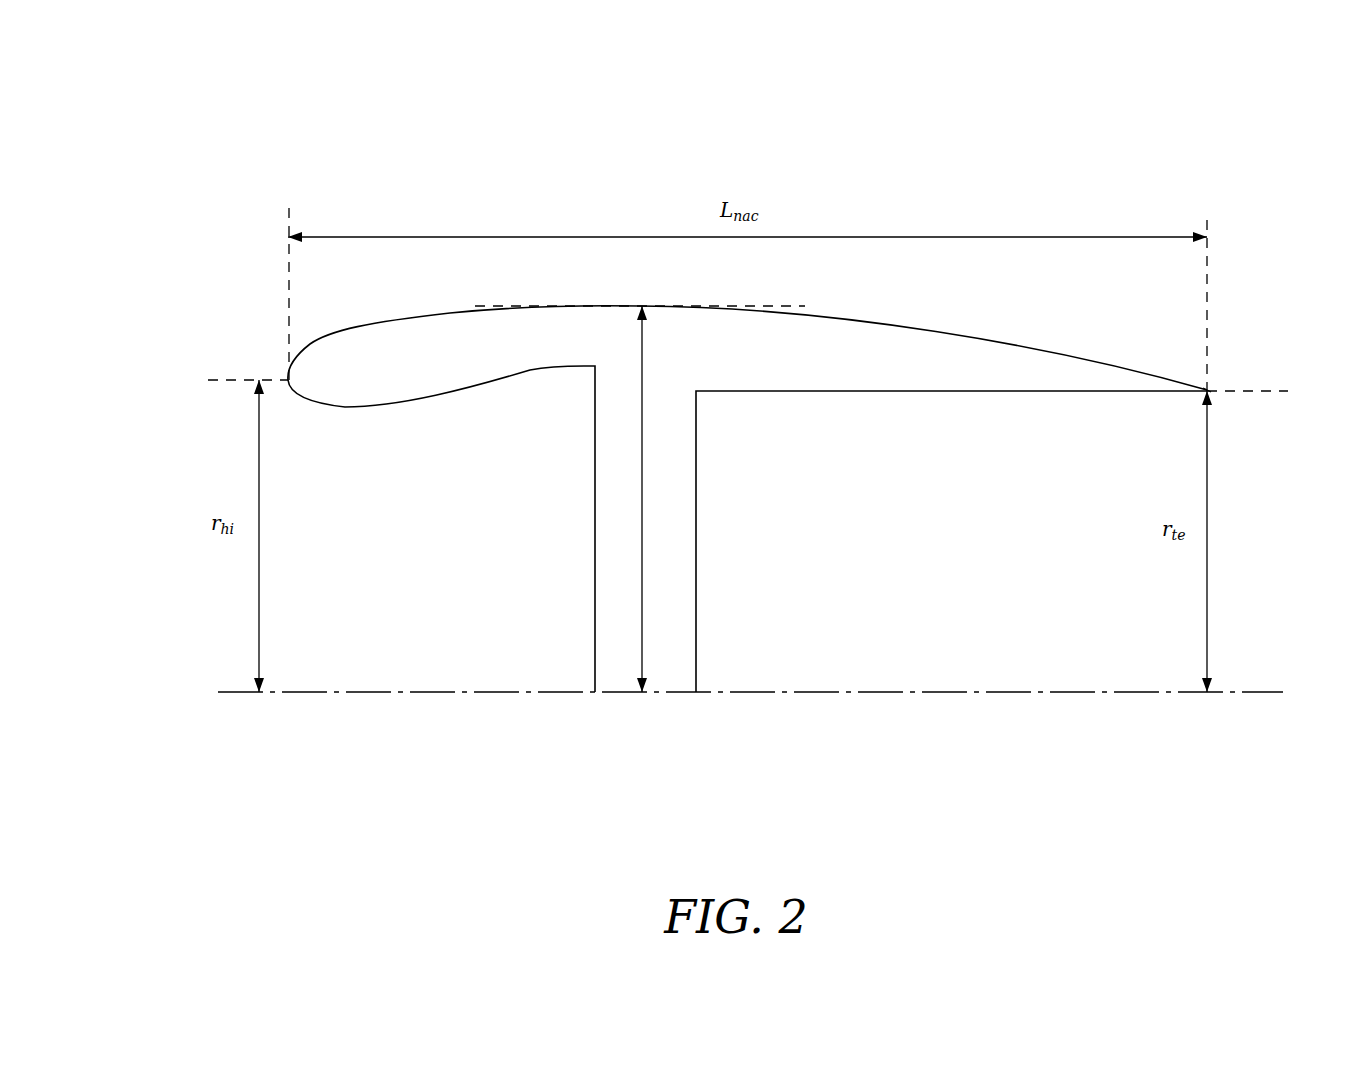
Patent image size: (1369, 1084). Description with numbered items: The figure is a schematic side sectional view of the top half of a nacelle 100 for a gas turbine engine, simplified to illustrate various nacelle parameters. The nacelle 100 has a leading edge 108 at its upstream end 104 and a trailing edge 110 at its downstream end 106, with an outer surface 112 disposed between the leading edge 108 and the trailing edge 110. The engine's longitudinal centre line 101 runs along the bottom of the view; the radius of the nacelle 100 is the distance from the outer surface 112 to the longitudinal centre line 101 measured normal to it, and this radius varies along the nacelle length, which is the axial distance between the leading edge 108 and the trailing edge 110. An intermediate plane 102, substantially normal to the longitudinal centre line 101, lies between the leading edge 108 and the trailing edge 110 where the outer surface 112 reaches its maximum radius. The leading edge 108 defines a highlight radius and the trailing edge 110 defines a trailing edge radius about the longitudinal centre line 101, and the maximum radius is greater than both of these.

The nacelle 100 is at (704, 379).
The longitudinal centre line 101 is at (1230, 692).
The intermediate plane 102 is at (642, 602).
The upstream end 104 is at (184, 426).
The downstream end 106 is at (1253, 450).
The leading edge 108 is at (286, 380).
The trailing edge 110 is at (1213, 390).
The outer surface 112 is at (449, 315).